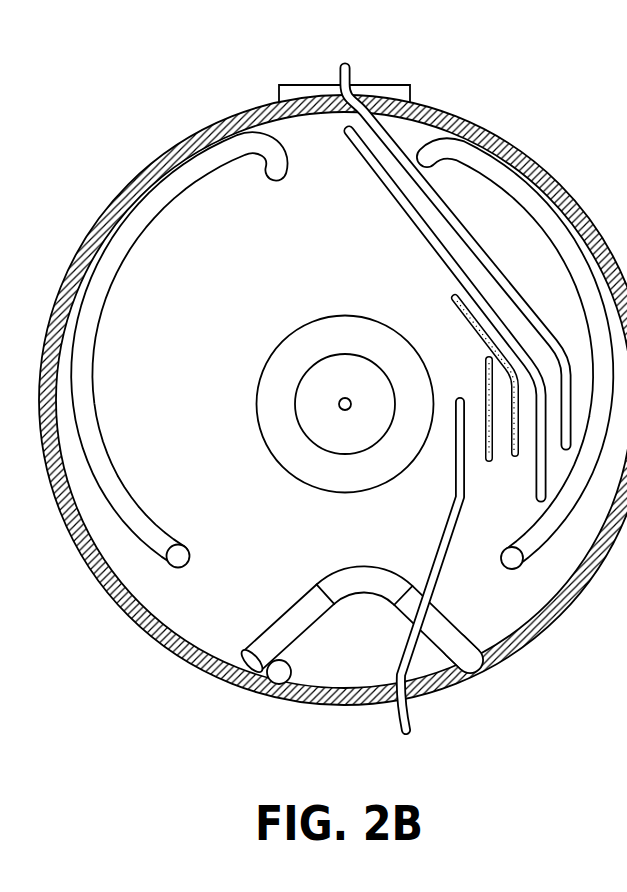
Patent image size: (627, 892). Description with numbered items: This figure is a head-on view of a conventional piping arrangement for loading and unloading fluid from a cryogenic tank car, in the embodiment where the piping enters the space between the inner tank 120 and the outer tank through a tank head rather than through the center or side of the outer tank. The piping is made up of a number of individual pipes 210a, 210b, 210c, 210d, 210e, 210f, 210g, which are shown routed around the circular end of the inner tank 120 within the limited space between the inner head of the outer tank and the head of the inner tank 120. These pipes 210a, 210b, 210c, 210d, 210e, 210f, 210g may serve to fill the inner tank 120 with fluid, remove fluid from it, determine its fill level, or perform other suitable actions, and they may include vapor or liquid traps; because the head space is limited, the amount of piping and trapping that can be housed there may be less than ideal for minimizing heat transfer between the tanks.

The inner tank 120 is at (187, 234).
The pipe 210a is at (209, 157).
The pipe 210b is at (508, 172).
The pipe 210c is at (411, 216).
The pipe 210d is at (478, 230).
The pipe 210e is at (267, 640).
The pipe 210f is at (281, 675).
The pipe 210g is at (443, 545).